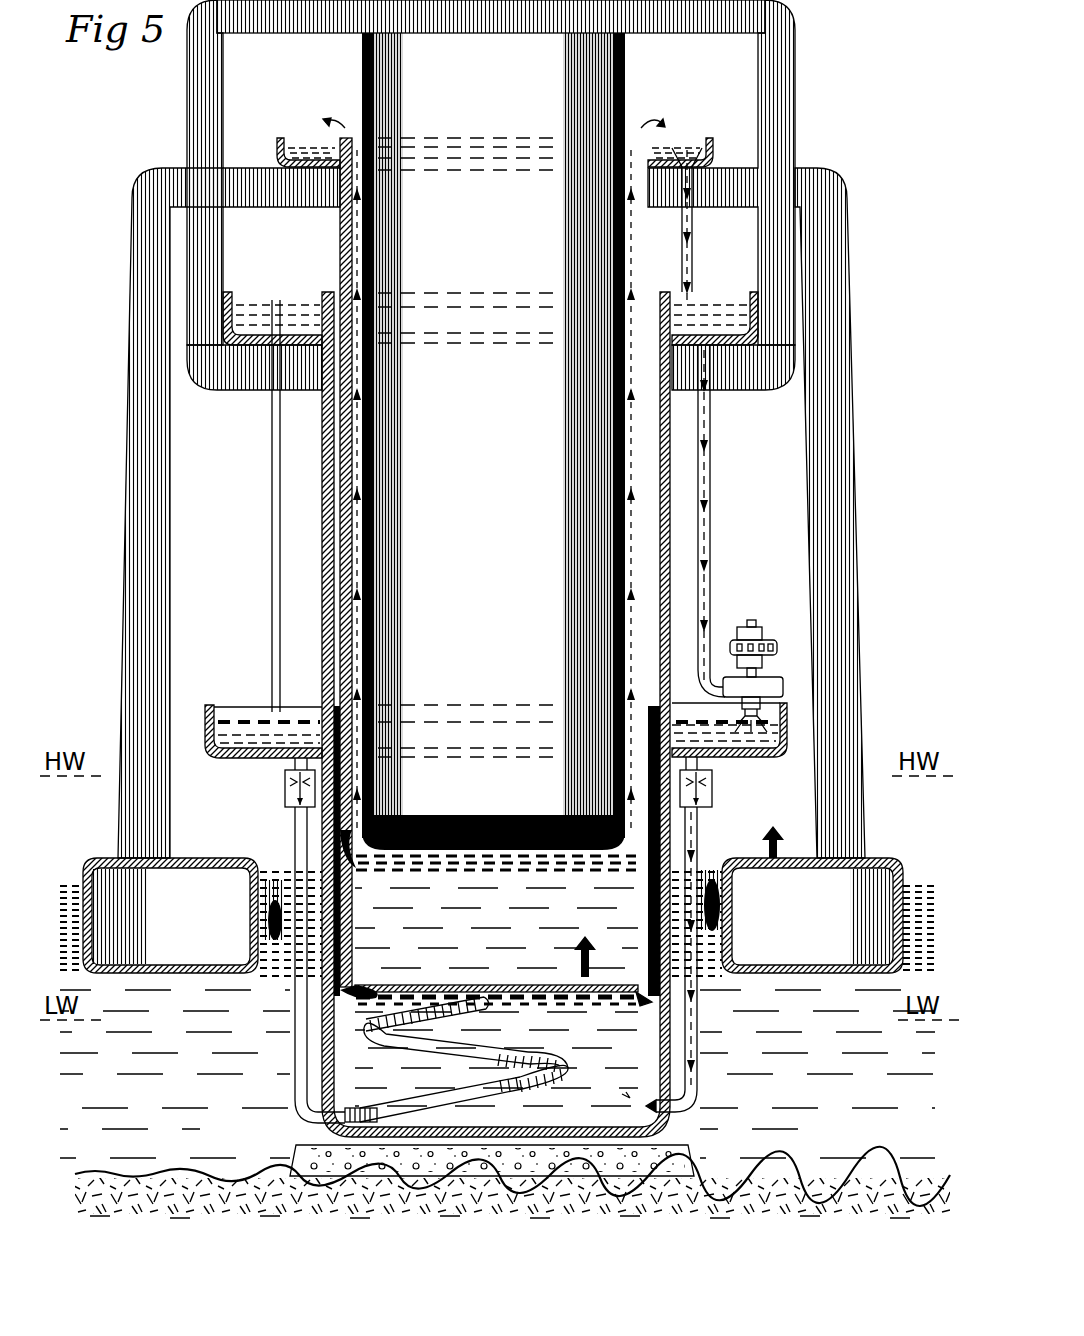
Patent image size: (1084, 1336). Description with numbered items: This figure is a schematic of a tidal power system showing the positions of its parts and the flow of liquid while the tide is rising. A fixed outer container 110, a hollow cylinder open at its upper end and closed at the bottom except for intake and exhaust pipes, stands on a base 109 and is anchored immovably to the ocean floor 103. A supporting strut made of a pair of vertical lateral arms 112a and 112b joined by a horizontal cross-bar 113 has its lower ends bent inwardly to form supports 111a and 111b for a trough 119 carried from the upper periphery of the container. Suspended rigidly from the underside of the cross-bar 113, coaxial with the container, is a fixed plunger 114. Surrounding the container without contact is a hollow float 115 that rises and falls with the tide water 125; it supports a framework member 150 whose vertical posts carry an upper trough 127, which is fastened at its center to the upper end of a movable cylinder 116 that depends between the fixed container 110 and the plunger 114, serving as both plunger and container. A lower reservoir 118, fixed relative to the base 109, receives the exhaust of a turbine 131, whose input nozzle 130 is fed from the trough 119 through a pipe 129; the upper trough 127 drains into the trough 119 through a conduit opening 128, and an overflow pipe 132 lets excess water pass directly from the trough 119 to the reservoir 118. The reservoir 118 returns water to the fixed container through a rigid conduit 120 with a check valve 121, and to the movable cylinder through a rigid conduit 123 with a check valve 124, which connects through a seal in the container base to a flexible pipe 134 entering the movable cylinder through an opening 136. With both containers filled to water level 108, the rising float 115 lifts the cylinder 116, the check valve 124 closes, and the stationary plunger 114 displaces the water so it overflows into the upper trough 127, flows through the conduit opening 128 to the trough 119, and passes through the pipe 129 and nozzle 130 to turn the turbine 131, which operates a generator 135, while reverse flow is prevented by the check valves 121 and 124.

The ocean floor 103 is at (822, 1180).
The water level 108 is at (246, 716).
The base 109 is at (294, 1150).
The fixed outer container 110 is at (698, 1100).
The support 111a is at (245, 392).
The support 111b is at (726, 390).
The lateral arm 112a is at (187, 134).
The lateral arm 112b is at (775, 90).
The horizontal cross-bar 113 is at (676, 33).
The fixed plunger 114 is at (364, 86).
The hollow float 115 is at (216, 858).
The movable cylinder 116 is at (345, 236).
The lower reservoir 118 is at (222, 706).
The trough 119 is at (700, 300).
The rigid conduit 120 is at (700, 1058).
The check valve 121 is at (712, 790).
The rigid conduit 123 is at (295, 1078).
The check valve 124 is at (285, 792).
The tide water 125 is at (906, 882).
The upper trough 127 is at (687, 140).
The conduit opening 128 is at (690, 216).
The pipe 129 is at (710, 492).
The input nozzle 130 is at (740, 684).
The turbine 131 is at (773, 693).
The overflow pipe 132 is at (272, 570).
The flexible pipe 134 is at (560, 1080).
The generator 135 is at (778, 648).
The opening 136 is at (496, 986).
The member 150 is at (253, 170).